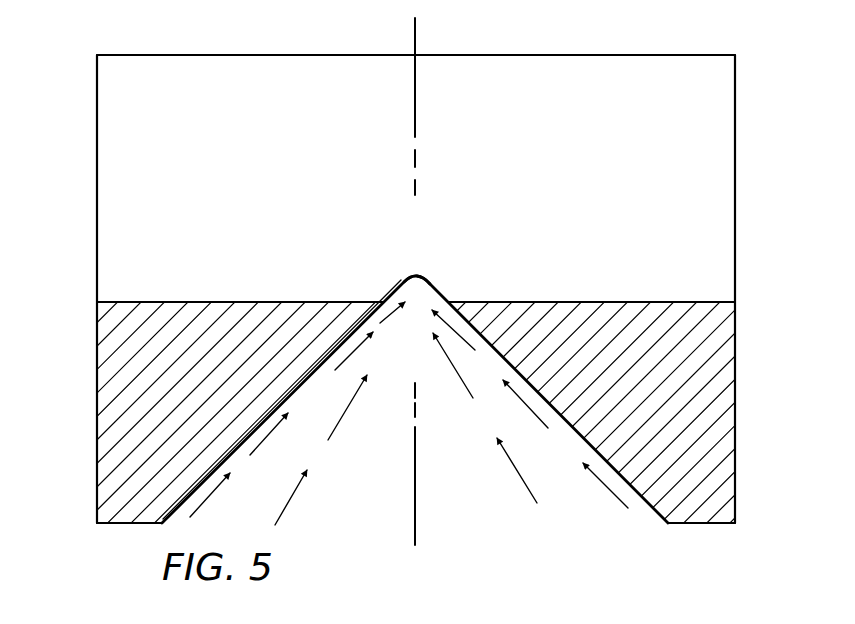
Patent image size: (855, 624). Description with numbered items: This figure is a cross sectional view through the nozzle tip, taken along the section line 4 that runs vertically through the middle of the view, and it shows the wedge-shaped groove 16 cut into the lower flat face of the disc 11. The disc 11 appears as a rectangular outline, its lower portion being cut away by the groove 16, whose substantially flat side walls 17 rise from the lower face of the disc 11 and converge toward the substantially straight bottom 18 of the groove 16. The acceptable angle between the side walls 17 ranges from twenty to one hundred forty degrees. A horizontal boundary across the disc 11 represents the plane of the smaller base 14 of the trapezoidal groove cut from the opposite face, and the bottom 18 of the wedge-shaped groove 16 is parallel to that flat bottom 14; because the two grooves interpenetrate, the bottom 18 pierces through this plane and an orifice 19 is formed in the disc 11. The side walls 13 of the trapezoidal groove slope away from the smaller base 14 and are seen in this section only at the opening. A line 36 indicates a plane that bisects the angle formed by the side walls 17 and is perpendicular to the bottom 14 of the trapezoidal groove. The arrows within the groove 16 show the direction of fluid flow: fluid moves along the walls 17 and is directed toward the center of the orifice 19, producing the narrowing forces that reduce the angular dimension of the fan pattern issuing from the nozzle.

The section line 4- 4 is at (420, 20).
The disc 11 is at (97, 255).
The side walls 13 is at (632, 66).
The smaller base 14 is at (640, 272).
The wedge-shaped groove 16 is at (367, 493).
The side walls 17 is at (288, 395).
The bottom 18 is at (412, 283).
The orifice 19 is at (455, 280).
The line 36 is at (415, 467).